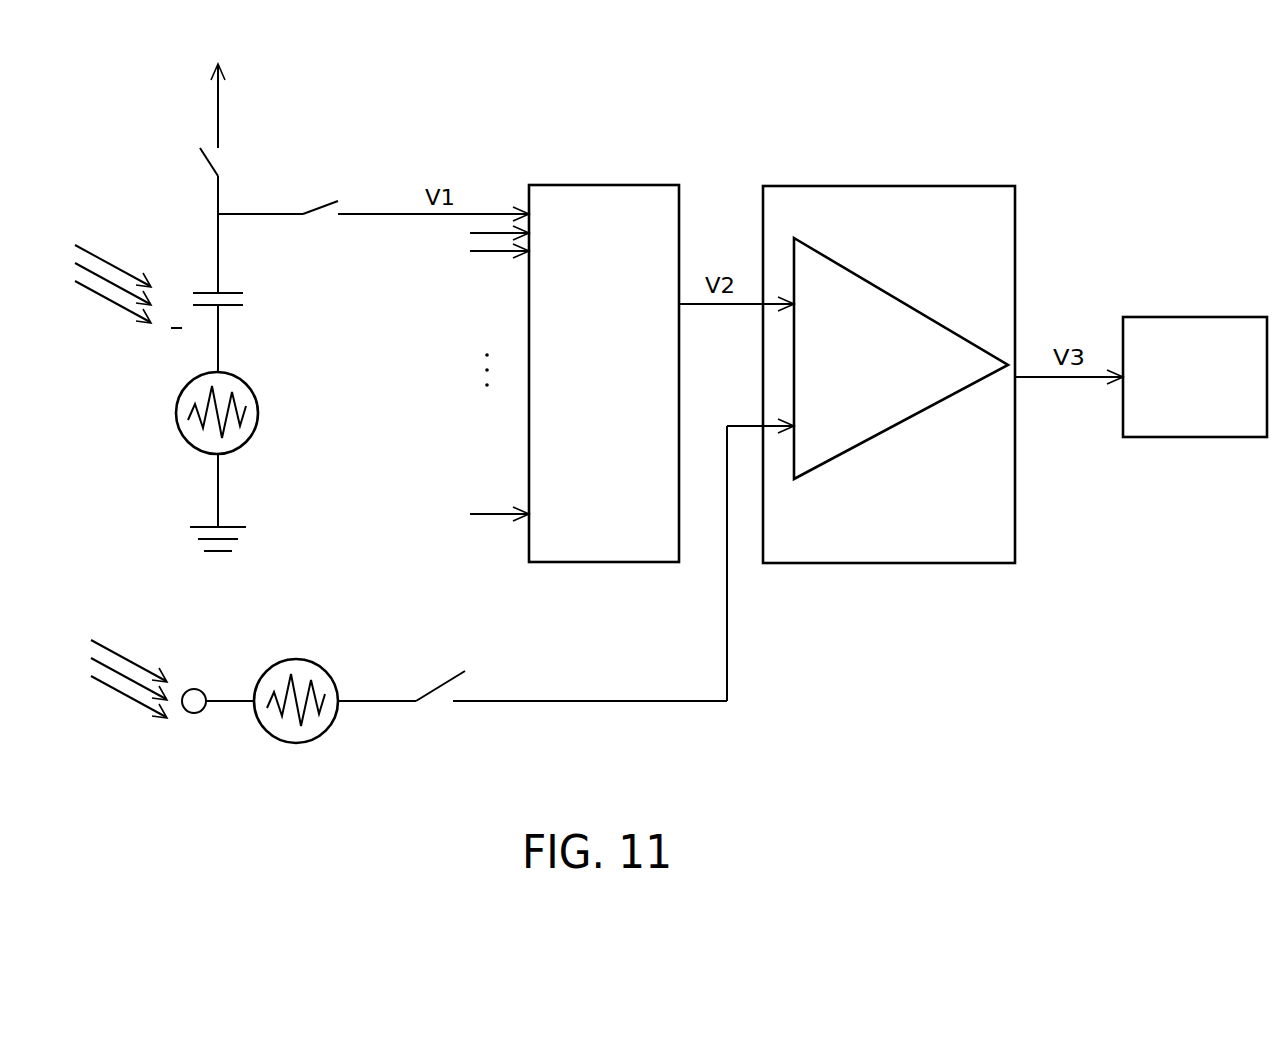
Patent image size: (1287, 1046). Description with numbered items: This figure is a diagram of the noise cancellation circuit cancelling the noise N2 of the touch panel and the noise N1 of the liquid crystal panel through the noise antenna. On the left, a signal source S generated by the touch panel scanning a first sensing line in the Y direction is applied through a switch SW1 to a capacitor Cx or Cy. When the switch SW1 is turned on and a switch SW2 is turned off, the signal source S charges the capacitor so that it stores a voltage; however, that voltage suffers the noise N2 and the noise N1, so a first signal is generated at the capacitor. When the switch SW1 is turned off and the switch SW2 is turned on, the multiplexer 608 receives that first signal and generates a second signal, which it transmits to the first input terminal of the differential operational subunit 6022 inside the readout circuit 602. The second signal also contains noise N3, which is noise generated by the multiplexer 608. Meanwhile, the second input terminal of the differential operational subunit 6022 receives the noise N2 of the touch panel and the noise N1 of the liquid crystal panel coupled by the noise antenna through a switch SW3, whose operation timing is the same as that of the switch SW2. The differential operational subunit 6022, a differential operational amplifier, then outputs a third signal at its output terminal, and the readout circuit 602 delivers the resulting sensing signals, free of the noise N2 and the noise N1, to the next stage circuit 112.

The multiplexer 608 is at (592, 185).
The differential operational subunit 6022 is at (852, 267).
The readout circuit 602 is at (960, 186).
The next stage circuit 112 is at (1185, 317).
The noise of the liquid crystal panel N1 is at (257, 557).
The noise of the touch panel N2 is at (99, 481).
The noise generated by the multiplexer N3 is at (583, 591).
The switch SW1 is at (177, 176).
The switch SW2 is at (373, 196).
The switch SW3 is at (566, 579).
The signal source S is at (218, 91).